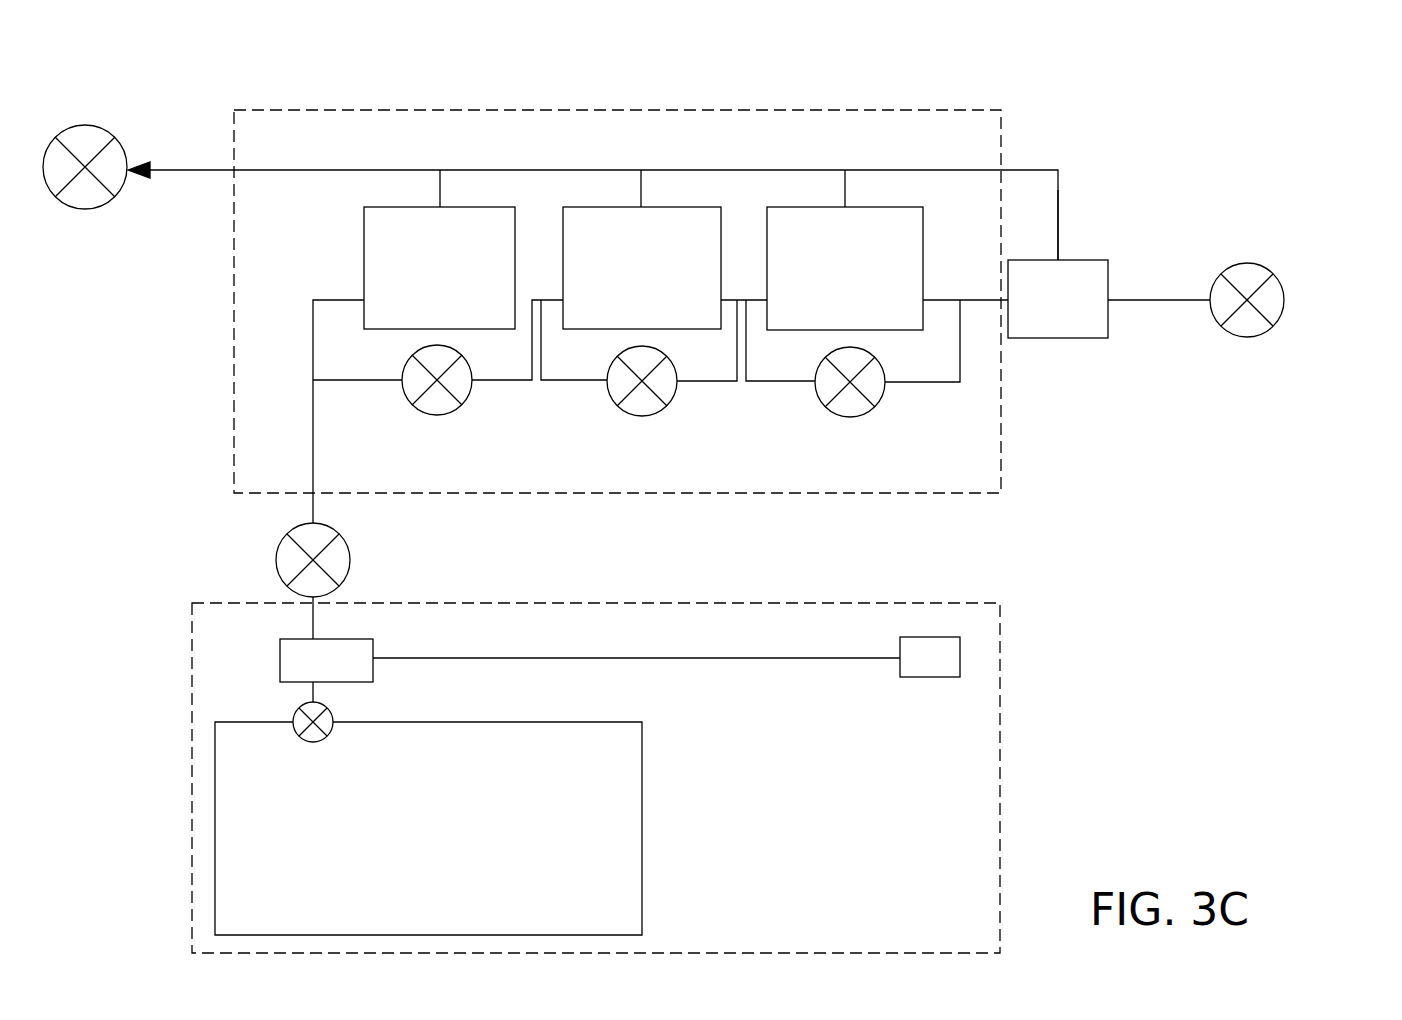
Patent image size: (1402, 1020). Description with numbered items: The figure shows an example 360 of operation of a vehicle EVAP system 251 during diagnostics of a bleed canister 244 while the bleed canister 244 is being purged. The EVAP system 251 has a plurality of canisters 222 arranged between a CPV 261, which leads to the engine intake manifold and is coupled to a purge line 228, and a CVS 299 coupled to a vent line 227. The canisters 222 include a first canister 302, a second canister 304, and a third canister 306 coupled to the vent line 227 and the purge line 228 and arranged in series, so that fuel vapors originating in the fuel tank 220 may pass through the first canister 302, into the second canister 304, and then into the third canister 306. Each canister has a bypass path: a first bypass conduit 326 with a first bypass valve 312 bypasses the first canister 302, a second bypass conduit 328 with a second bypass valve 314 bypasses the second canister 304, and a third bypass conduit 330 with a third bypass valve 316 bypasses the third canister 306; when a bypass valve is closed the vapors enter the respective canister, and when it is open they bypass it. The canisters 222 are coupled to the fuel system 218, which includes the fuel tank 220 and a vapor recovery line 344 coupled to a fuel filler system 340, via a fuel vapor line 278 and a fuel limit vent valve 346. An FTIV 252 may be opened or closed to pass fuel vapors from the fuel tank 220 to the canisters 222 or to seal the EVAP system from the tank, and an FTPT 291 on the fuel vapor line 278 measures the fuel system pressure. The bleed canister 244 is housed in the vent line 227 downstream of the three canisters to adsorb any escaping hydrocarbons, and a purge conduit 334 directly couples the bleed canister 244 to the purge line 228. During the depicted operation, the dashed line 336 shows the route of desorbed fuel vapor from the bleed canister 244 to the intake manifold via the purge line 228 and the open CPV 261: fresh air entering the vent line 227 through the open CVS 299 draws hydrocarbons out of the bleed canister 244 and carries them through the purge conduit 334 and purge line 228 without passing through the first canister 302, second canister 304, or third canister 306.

The example of operation of the EVAP system 360 is at (1326, 86).
The EVAP system 251 is at (1140, 148).
The canisters 222 is at (1001, 110).
The fuel system 218 is at (1000, 603).
The CPV 261 is at (85, 125).
The purge line 228 is at (158, 169).
The dashed line 336 is at (780, 170).
The purge conduit 334 is at (1058, 222).
The bleed canister 244 is at (1058, 299).
The vent line 227 is at (1193, 299).
The CVS 299 is at (1247, 263).
The first canister 302 is at (439, 268).
The second canister 304 is at (642, 268).
The third canister 306 is at (845, 268).
The first bypass valve 312 is at (437, 415).
The second bypass valve 314 is at (646, 419).
The third bypass valve 316 is at (862, 413).
The first bypass conduit 326 is at (504, 383).
The second bypass conduit 328 is at (715, 383).
The third bypass conduit 330 is at (905, 385).
The fuel vapor line 278 is at (313, 416).
The FTIV 252 is at (337, 530).
The FTPT 291 is at (333, 637).
The vapor recovery line 344 is at (477, 657).
The fuel filler system 340 is at (930, 657).
The fuel limit vent valve 346 is at (313, 742).
The fuel tank 220 is at (428, 828).